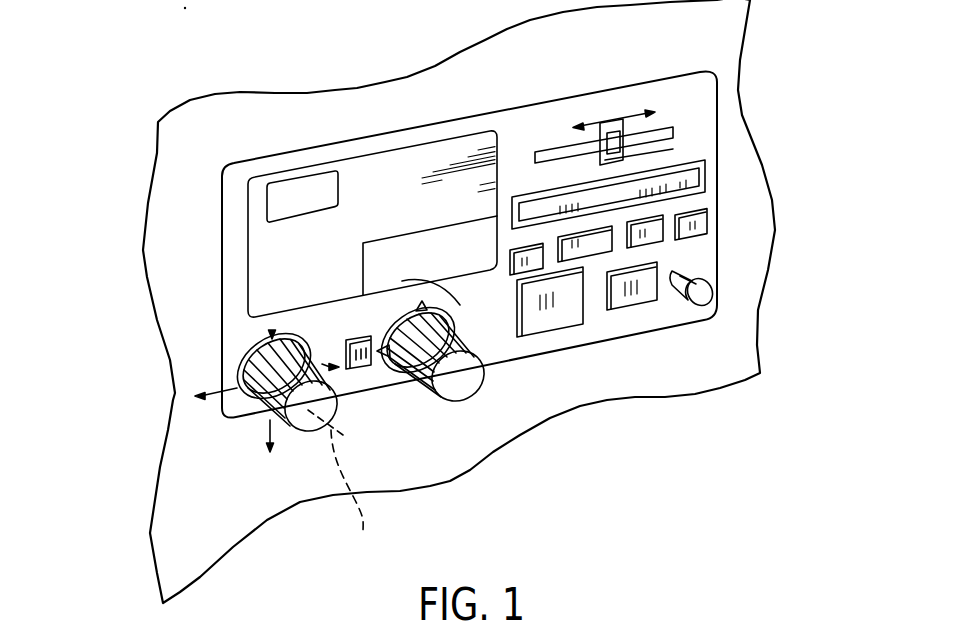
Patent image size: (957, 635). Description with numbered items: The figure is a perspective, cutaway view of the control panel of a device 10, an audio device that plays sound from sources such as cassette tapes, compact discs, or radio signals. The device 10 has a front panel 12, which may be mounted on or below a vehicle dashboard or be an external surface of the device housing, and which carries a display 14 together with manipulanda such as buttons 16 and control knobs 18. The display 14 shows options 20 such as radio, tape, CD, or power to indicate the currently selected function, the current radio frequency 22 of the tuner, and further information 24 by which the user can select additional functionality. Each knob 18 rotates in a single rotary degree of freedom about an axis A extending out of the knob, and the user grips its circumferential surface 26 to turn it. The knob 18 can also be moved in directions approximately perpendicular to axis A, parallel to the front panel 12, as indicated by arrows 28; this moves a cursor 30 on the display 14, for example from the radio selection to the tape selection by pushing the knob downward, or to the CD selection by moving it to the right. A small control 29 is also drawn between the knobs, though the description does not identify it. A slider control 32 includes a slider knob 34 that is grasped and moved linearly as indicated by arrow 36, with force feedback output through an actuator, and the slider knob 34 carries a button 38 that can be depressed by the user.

The device 10 is at (133, 162).
The front panel 12 is at (547, 110).
The display 14 is at (443, 152).
The buttons 16 is at (690, 221).
The control knob 18 is at (340, 410).
The options 20 is at (392, 165).
The radio frequency 22 is at (247, 288).
The information 24 is at (479, 224).
The circumferential surface 26 is at (272, 388).
The arrows 28 is at (237, 388).
The small button 29 is at (362, 368).
The cursor 30 is at (266, 208).
The slider control 32 is at (672, 118).
The slider knob 34 is at (605, 160).
The arrow 36 is at (613, 122).
The button 38 is at (607, 153).
The axis A is at (350, 497).